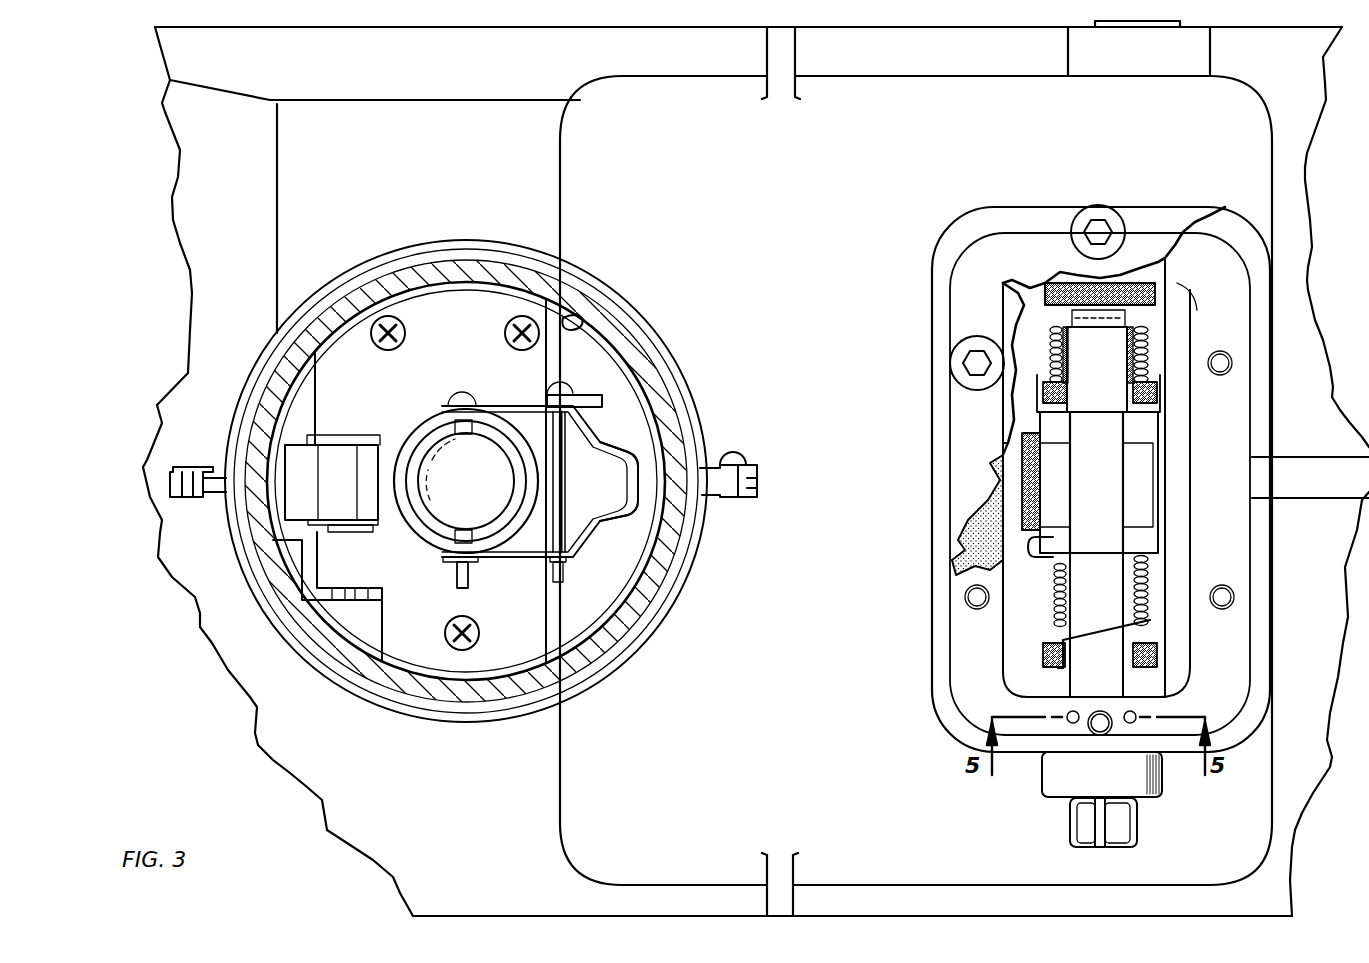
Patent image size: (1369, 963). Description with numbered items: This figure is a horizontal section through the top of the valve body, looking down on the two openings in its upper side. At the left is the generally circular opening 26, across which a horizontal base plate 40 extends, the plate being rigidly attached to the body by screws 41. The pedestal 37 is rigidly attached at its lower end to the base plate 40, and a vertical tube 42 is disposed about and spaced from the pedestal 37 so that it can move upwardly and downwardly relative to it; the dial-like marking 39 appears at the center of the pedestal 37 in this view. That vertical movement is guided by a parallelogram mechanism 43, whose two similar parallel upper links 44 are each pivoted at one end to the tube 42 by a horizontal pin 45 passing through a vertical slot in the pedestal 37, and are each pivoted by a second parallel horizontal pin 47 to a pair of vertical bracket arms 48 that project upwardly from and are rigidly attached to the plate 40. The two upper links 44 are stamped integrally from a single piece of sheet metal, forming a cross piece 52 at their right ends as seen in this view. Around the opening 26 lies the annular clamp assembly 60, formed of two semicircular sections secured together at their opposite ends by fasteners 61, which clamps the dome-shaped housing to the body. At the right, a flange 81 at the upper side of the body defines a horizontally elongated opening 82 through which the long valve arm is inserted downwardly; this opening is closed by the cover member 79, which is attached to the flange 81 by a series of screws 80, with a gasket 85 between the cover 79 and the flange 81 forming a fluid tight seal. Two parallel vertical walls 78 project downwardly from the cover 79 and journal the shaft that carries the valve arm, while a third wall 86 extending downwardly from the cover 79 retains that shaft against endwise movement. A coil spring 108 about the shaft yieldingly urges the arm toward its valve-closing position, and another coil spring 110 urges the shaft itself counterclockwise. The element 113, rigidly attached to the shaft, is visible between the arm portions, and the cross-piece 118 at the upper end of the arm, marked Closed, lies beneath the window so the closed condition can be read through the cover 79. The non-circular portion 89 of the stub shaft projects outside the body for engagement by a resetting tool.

The circular opening 26 is at (568, 326).
The pedestal 37 is at (437, 452).
The indicator dial 39 is at (466, 481).
The horizontal base plate 40 is at (437, 312).
The screws 41 is at (405, 340).
The vertical tube 42 is at (417, 537).
The parallelogram mechanism 43 is at (500, 568).
The upper links 44 is at (508, 403).
The horizontal pin 45 is at (455, 580).
The second horizontal pin 47 is at (568, 525).
The vertical bracket arms 48 is at (585, 398).
The cross piece 52 is at (612, 446).
The annular clamp assembly 60 is at (690, 377).
The fasteners 61 is at (197, 467).
The vertical walls 78 is at (1157, 396).
The cover member 79 is at (987, 267).
The screws 80 is at (1098, 212).
The flange 81 is at (1203, 232).
The horizontally elongated opening 82 is at (1185, 307).
The gasket 85 is at (965, 545).
The third wall 86 is at (1053, 290).
The non-circular portion 89 is at (1070, 828).
The coil spring 108 is at (1053, 613).
The coil spring 110 is at (1058, 330).
The element 113 is at (1140, 508).
The cross-piece 118 is at (1112, 477).